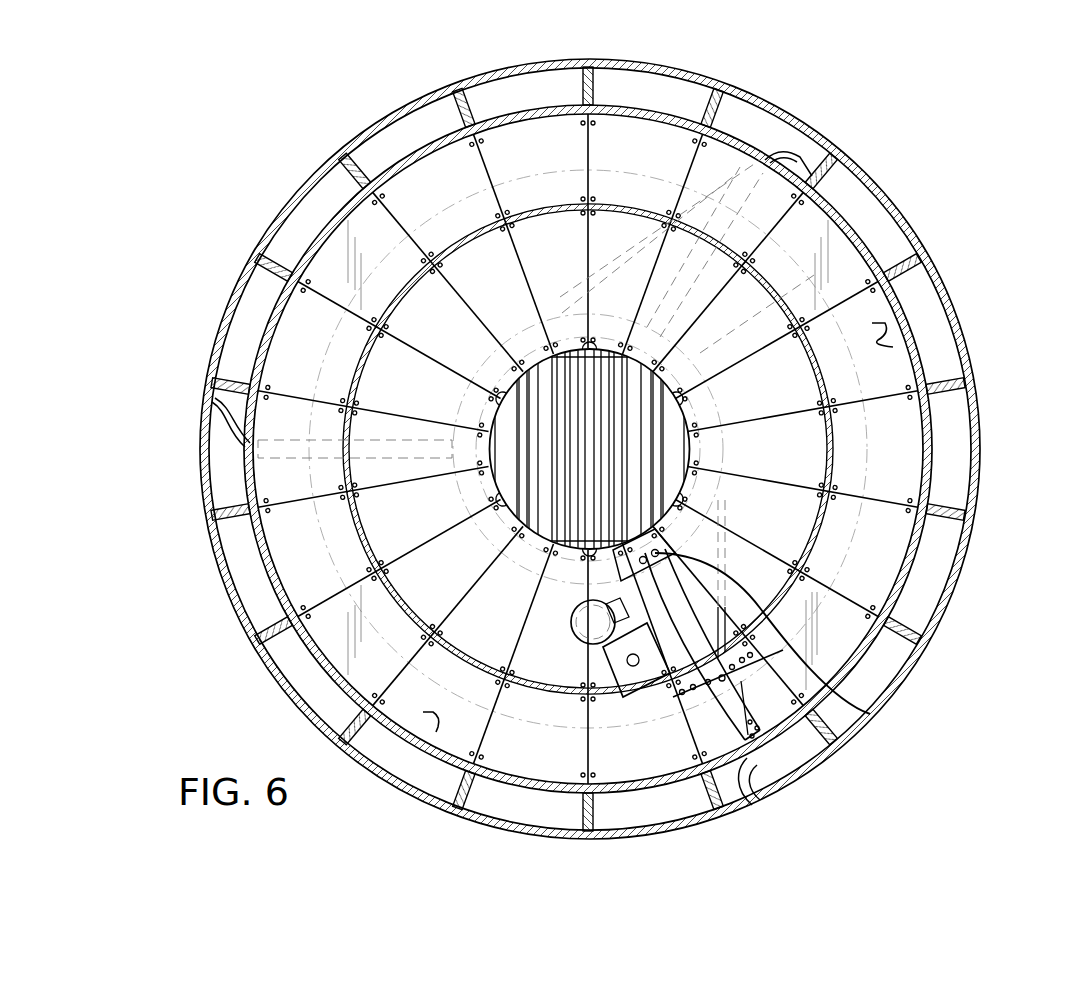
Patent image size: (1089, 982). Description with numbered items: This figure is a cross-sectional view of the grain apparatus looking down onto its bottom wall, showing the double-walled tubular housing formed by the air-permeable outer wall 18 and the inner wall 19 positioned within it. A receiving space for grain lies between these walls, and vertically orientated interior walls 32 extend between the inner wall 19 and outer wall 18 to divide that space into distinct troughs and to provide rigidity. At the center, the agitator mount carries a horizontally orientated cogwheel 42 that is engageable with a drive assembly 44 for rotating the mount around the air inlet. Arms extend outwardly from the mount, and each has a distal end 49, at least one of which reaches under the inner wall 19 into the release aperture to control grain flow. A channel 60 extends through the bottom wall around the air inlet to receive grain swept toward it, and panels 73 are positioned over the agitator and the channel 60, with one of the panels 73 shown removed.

The outer wall 18 is at (970, 540).
The inner wall 19 is at (932, 450).
The interior walls 32 is at (595, 82).
The cogwheel 42 is at (870, 714).
The drive assembly 44 is at (633, 666).
The distal end 49 is at (212, 402).
The channel 60 is at (772, 698).
The panels 73 is at (883, 337).